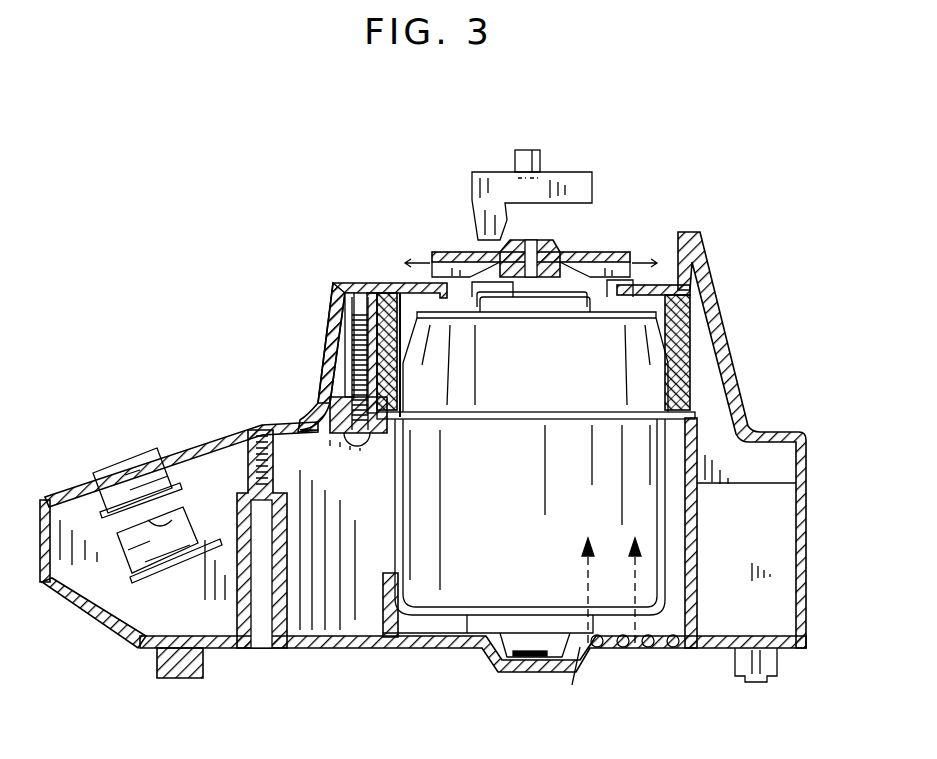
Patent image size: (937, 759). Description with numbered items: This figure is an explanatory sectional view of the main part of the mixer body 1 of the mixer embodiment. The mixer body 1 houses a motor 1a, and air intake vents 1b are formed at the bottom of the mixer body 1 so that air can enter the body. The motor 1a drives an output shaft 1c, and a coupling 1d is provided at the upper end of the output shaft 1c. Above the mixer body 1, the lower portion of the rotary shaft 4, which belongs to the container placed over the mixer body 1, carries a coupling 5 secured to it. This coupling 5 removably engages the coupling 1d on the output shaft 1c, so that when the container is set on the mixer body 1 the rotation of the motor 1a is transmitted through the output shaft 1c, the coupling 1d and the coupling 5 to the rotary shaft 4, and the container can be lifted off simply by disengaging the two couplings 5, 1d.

The mixer body 1 is at (775, 433).
The motor 1a is at (655, 566).
The air intake vents 1b is at (638, 635).
The output shaft 1c is at (538, 243).
The coupling 1d is at (612, 254).
The rotary shaft 4 is at (541, 157).
The coupling 5 is at (578, 190).